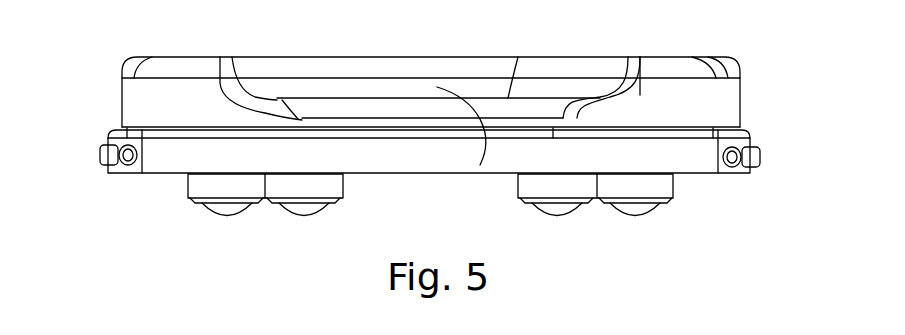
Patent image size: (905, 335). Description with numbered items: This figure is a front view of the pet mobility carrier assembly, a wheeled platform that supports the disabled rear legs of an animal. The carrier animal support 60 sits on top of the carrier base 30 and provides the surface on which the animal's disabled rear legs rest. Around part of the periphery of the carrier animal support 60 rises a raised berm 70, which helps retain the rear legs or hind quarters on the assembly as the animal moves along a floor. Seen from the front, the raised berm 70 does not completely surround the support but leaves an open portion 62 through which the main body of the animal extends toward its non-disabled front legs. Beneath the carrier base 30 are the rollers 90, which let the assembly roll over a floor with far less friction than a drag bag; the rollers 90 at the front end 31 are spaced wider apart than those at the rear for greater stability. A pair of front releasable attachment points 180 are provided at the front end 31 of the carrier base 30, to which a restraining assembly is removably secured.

The carrier base 30 is at (707, 174).
The front end 31 is at (258, 158).
The carrier animal support 60 is at (742, 113).
The open portion 62 is at (480, 165).
The raised berm 70 is at (738, 68).
The rollers 90 is at (572, 210).
The releasable attachment points 180 is at (100, 155).